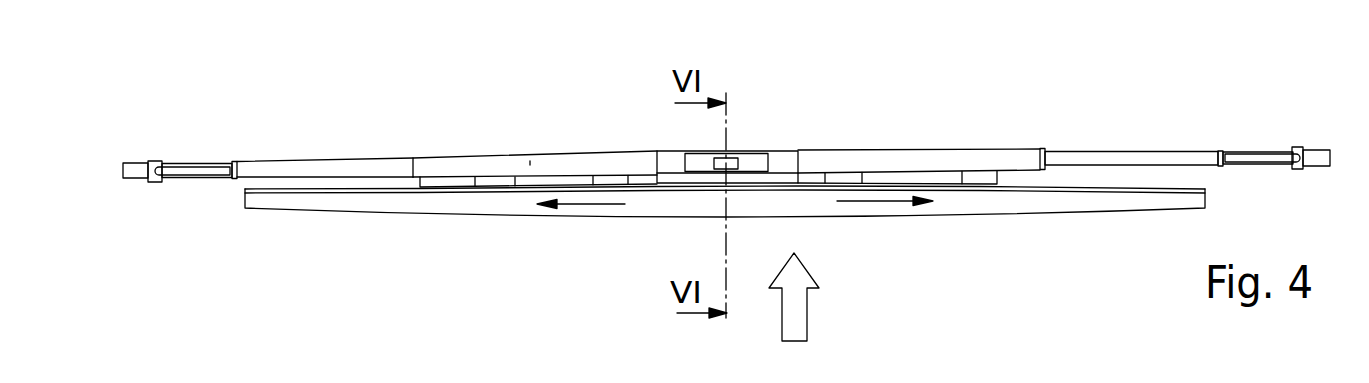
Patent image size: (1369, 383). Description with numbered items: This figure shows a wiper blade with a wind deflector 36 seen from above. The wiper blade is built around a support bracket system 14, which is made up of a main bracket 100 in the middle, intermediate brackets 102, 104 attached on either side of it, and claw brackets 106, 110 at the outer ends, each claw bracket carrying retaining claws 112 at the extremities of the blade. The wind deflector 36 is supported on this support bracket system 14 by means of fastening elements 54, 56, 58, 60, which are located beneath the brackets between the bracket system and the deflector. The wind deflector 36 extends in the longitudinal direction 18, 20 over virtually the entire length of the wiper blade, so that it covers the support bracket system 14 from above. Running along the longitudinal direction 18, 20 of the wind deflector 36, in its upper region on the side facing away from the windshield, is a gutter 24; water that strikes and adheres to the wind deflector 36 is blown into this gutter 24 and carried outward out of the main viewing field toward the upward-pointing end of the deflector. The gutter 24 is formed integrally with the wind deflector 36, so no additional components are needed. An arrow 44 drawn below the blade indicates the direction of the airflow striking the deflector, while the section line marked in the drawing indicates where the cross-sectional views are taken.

The support bracket system 14 is at (820, 128).
The longitudinal direction 18 is at (582, 206).
The longitudinal direction 20 is at (917, 253).
The gutter 24 is at (368, 190).
The wind deflector 36 is at (1044, 232).
The air flow direction arrow 44 is at (798, 327).
The fastening element 54 is at (487, 182).
The fastening element 56 is at (608, 180).
The fastening element 58 is at (883, 123).
The fastening element 60 is at (985, 180).
The main bracket 100 is at (440, 167).
The intermediate bracket 102 is at (267, 167).
The intermediate bracket 104 is at (1122, 160).
The claw bracket 106 is at (163, 165).
The claw bracket 110 is at (1262, 157).
The retaining claw 112 is at (1302, 149).